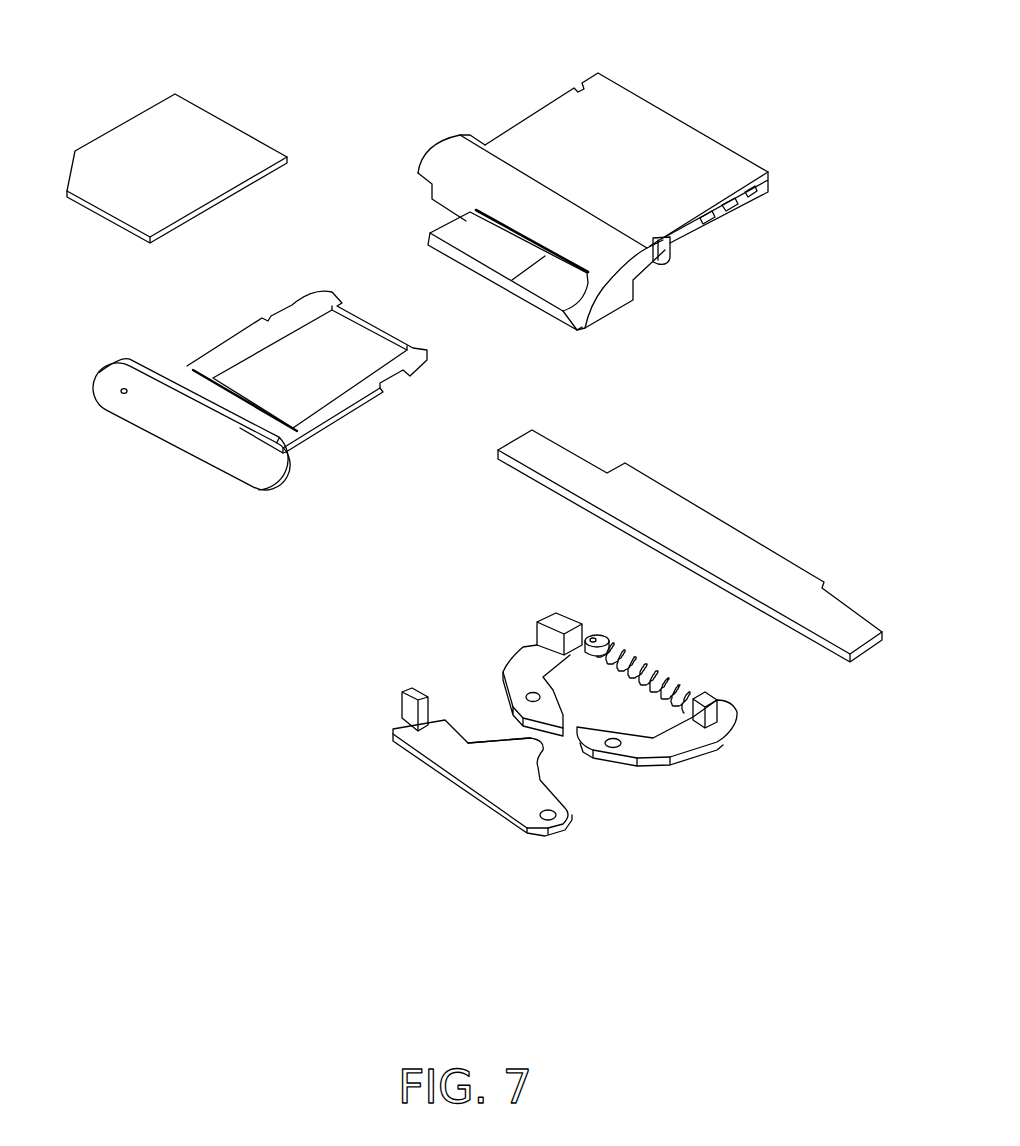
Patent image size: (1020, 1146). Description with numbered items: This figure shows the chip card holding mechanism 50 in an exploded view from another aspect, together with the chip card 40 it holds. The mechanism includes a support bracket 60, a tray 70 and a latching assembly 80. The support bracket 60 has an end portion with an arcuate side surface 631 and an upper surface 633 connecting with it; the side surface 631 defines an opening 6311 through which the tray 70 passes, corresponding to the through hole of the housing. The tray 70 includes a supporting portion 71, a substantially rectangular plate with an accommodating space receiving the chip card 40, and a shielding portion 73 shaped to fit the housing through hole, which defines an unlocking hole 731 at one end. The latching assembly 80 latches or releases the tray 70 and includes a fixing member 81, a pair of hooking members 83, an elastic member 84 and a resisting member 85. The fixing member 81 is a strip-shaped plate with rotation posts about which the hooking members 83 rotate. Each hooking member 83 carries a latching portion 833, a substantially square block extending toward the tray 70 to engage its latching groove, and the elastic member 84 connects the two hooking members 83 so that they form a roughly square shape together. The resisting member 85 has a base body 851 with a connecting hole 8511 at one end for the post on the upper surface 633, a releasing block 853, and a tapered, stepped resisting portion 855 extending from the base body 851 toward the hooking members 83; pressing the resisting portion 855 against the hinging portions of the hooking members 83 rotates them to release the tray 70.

The chip card holding mechanism 50 is at (272, 62).
The chip card 40 is at (138, 135).
The support bracket 60 is at (517, 95).
The arcuate side surface 631 is at (645, 262).
The upper surface 633 is at (600, 320).
The opening 6311 is at (473, 240).
The tray 70 is at (228, 317).
The supporting portion 71 is at (347, 400).
The shielding portion 73 is at (183, 427).
The unlocking hole 731 is at (122, 394).
The latching assembly 80 is at (863, 742).
The fixing member 81 is at (797, 608).
The hooking member 83 is at (705, 758).
The latching portion 833 is at (553, 617).
The elastic member 84 is at (720, 696).
The resisting member 85 is at (578, 800).
The base body 851 is at (433, 752).
The releasing block 853 is at (407, 703).
The resisting portion 855 is at (530, 748).
The connecting hole 8511 is at (550, 819).